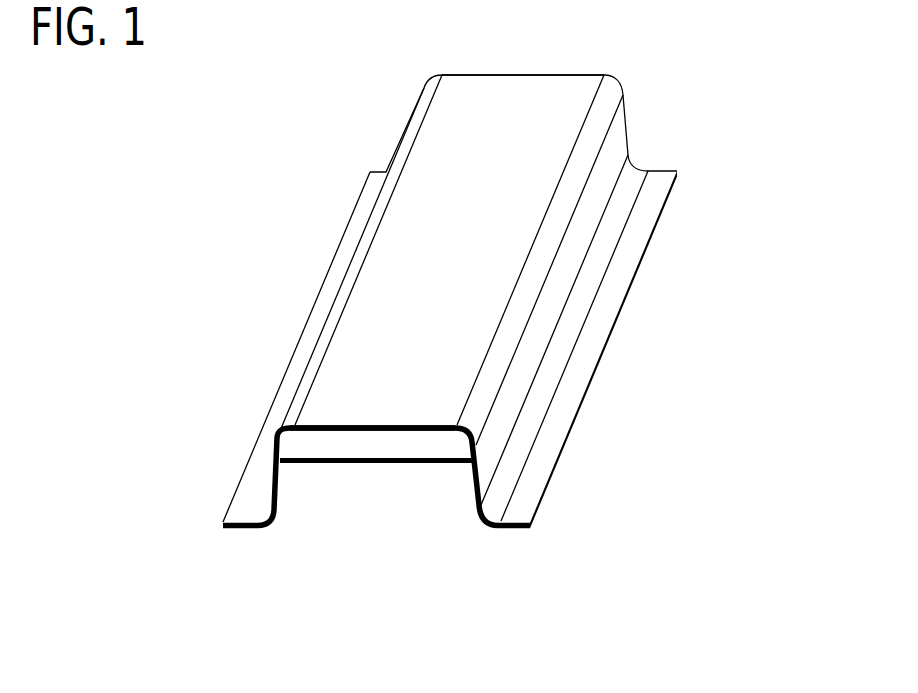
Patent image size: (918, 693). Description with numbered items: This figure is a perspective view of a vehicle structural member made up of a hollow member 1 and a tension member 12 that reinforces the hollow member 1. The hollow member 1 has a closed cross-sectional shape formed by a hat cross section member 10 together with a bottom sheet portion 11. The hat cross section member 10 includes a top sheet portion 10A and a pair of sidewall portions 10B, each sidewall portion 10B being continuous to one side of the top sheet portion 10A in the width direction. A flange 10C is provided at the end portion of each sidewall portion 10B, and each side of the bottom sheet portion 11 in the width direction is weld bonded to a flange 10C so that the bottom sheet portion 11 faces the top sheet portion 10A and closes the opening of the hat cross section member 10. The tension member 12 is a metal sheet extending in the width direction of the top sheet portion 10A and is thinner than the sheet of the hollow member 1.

The hollow member 1 is at (375, 100).
The hat cross section member 10 is at (512, 301).
The top sheet portion 10A is at (485, 212).
The sidewall portions 10B is at (563, 268).
The flange 10C is at (587, 347).
The bottom sheet portion 11 is at (413, 492).
The tension member 12 is at (355, 443).